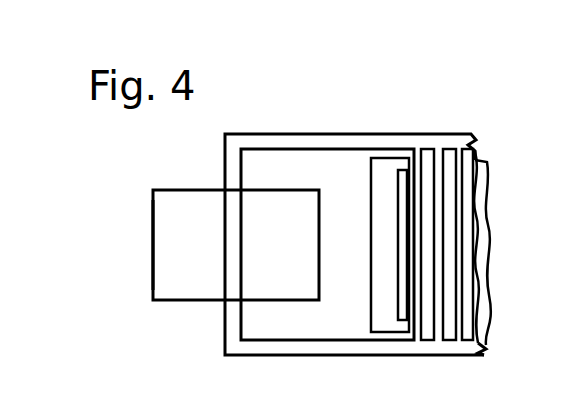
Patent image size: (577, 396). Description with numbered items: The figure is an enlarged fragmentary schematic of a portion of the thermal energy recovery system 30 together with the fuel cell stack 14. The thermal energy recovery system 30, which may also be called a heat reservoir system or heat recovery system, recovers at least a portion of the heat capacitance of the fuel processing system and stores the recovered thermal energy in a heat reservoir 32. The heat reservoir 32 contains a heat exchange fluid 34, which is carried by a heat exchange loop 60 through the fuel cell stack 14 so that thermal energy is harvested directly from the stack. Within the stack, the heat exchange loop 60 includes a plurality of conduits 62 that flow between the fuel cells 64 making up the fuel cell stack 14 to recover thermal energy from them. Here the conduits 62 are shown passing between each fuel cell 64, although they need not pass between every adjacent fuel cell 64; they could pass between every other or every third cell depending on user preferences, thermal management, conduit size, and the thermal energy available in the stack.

The fuel cell stack 14 is at (490, 153).
The thermal energy recovery system 30 is at (276, 118).
The heat reservoir 32 is at (148, 243).
The heat exchange fluid 34 is at (150, 222).
The heat exchange loop 60 is at (349, 127).
The conduits 62 is at (418, 203).
The fuel cells 64 is at (403, 295).